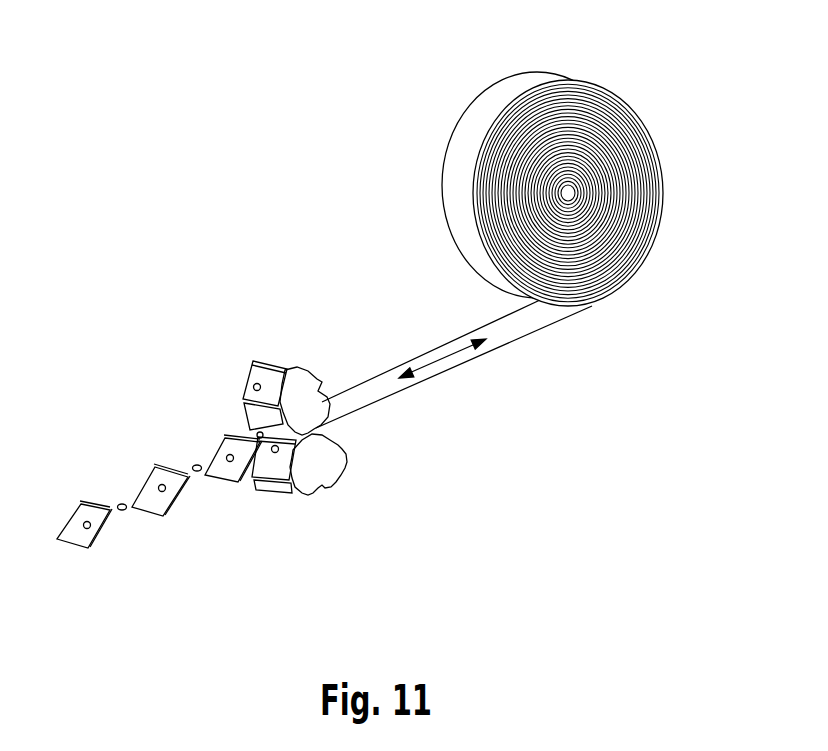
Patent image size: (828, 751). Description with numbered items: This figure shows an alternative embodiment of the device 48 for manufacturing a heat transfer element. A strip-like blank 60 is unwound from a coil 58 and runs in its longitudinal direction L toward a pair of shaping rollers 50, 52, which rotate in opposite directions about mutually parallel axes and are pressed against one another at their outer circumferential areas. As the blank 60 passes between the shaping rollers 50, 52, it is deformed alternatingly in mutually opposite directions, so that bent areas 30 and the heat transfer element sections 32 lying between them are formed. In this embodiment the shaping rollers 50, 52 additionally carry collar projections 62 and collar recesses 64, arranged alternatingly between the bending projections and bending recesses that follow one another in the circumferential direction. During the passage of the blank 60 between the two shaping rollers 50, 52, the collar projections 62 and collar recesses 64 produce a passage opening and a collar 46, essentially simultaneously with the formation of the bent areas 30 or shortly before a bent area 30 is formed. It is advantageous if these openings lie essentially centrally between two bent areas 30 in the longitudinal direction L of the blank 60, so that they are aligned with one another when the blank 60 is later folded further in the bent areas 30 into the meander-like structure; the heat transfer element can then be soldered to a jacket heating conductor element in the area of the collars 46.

The bent area 30 is at (152, 520).
The heat transfer element section 32 is at (135, 512).
The collar 46 is at (122, 506).
The device 48 is at (315, 192).
The shaping roller 50 is at (301, 372).
The shaping roller 52 is at (340, 468).
The coil 58 is at (508, 236).
The strip-like blank 60 is at (545, 318).
The collar projection 62 is at (248, 386).
The collar recess 64 is at (272, 494).
The longitudinal direction L is at (447, 355).